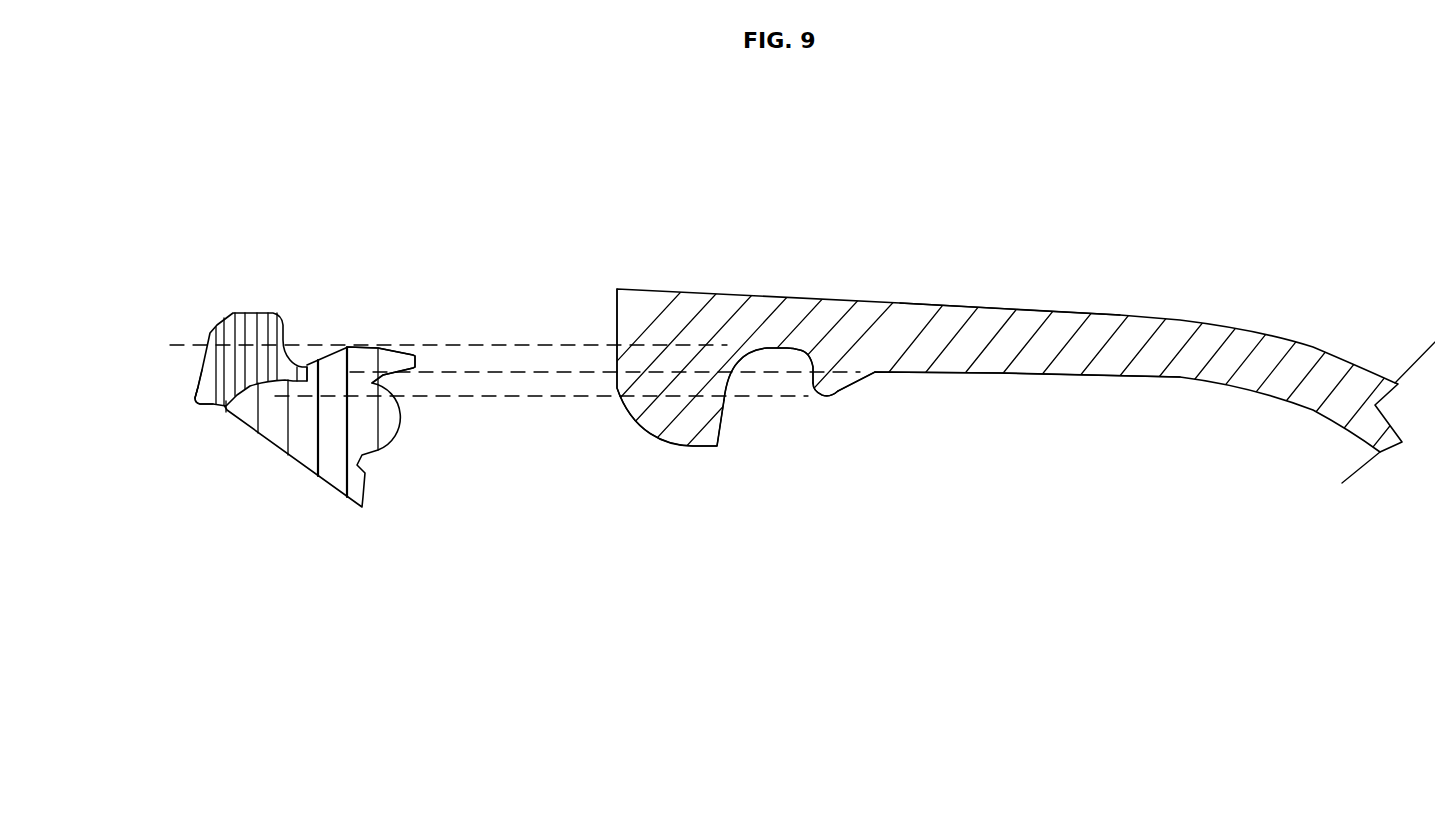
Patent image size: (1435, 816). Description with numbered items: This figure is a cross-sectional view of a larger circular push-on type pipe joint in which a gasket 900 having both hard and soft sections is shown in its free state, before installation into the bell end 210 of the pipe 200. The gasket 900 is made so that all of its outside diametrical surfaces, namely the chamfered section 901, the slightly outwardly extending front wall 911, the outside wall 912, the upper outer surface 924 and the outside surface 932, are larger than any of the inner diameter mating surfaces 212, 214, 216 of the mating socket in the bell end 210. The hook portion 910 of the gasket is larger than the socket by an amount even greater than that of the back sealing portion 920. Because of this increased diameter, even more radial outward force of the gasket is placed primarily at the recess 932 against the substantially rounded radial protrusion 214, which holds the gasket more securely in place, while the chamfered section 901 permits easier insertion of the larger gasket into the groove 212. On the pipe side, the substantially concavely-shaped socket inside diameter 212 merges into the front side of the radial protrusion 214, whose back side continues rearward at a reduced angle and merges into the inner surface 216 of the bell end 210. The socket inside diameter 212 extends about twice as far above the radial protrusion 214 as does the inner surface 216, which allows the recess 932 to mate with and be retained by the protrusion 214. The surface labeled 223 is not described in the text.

The gasket 900 is at (205, 265).
The chamfered section 901 is at (222, 322).
The hook portion 910 is at (205, 380).
The slightly outwardly extending front wall 911 is at (200, 370).
The outside wall 912 is at (253, 313).
The back sealing portion 920 is at (365, 430).
The upper outer surface 924 is at (385, 347).
The recess 932 is at (297, 363).
The pipe 200 is at (675, 232).
The bell end 210 is at (617, 287).
The socket inside diameter 212 is at (775, 345).
The radial protrusion 214 is at (832, 395).
The inner surface 216 is at (912, 370).
The groove flank 223 is at (850, 388).